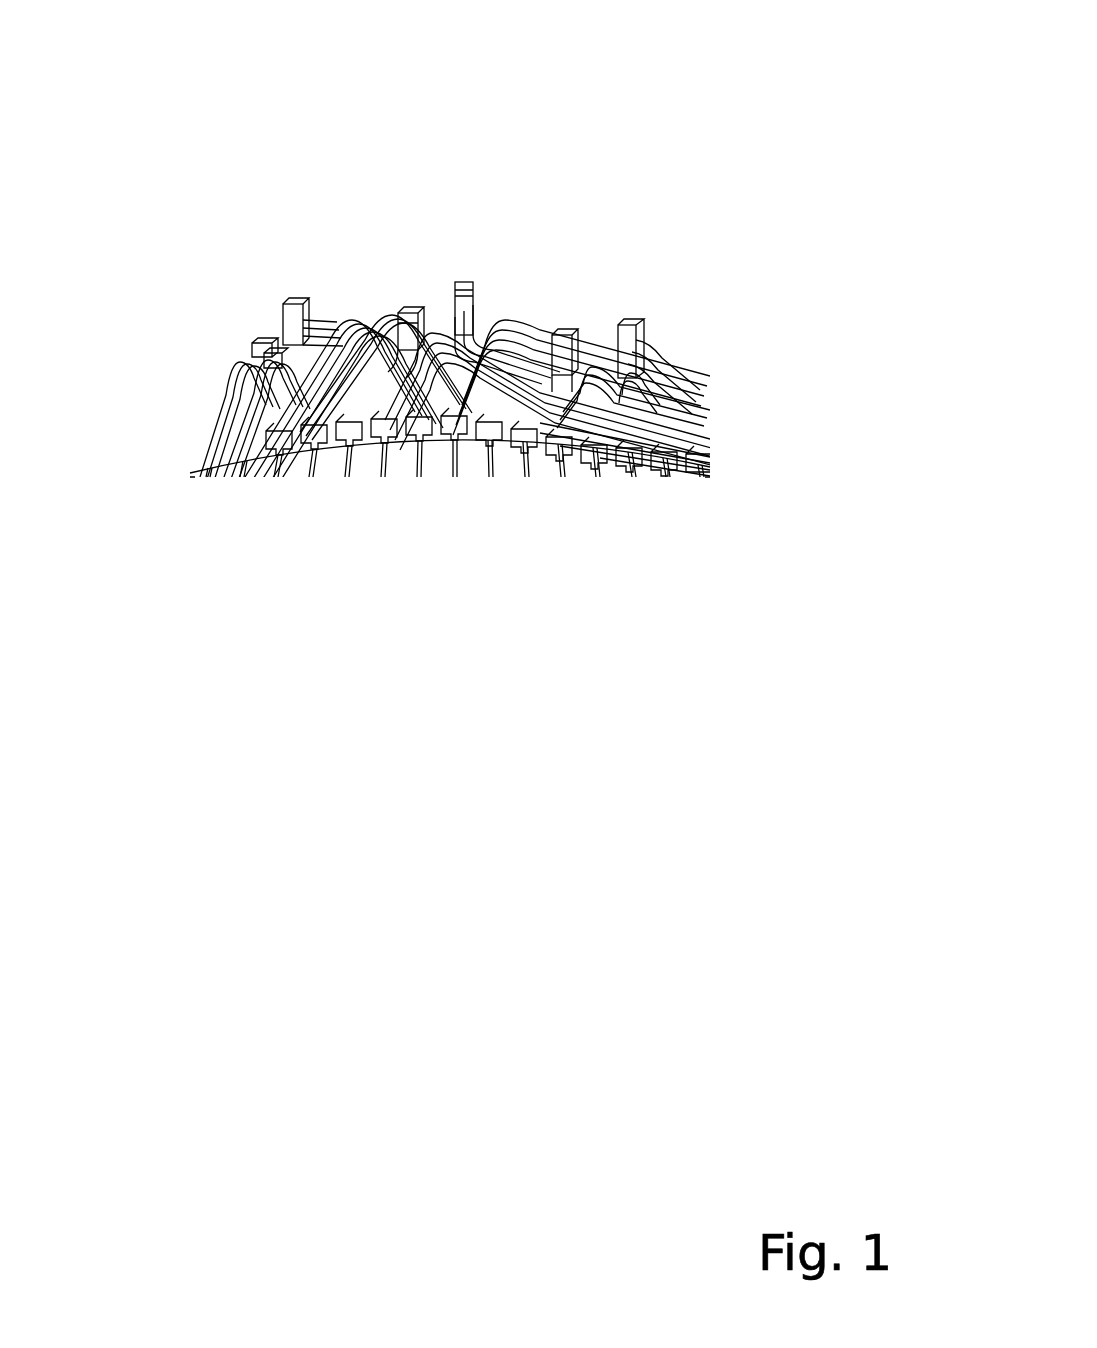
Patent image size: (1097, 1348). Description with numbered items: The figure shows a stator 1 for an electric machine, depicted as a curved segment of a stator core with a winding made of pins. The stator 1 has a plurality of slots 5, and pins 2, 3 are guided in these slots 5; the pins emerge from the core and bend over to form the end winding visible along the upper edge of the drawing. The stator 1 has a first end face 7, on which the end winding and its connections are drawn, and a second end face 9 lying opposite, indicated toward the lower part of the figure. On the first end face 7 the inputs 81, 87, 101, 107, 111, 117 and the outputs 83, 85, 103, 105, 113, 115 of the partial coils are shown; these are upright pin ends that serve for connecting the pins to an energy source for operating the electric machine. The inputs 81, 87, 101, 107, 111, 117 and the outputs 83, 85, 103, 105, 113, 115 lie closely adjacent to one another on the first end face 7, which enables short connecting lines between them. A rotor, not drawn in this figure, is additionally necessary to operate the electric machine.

The stator 1 is at (490, 55).
The pin 2 is at (298, 450).
The pin 3 is at (450, 456).
The slot 5 is at (441, 478).
The first end face 7 is at (207, 320).
The second end face 9 is at (496, 728).
The input 81 is at (252, 350).
The output 83 is at (280, 297).
The output 85 is at (298, 303).
The input 87 is at (255, 345).
The input 101 is at (409, 313).
The output 103 is at (462, 282).
The output 105 is at (466, 284).
The input 107 is at (394, 316).
The input 111 is at (565, 334).
The output 113 is at (638, 330).
The output 115 is at (640, 331).
The input 117 is at (556, 358).